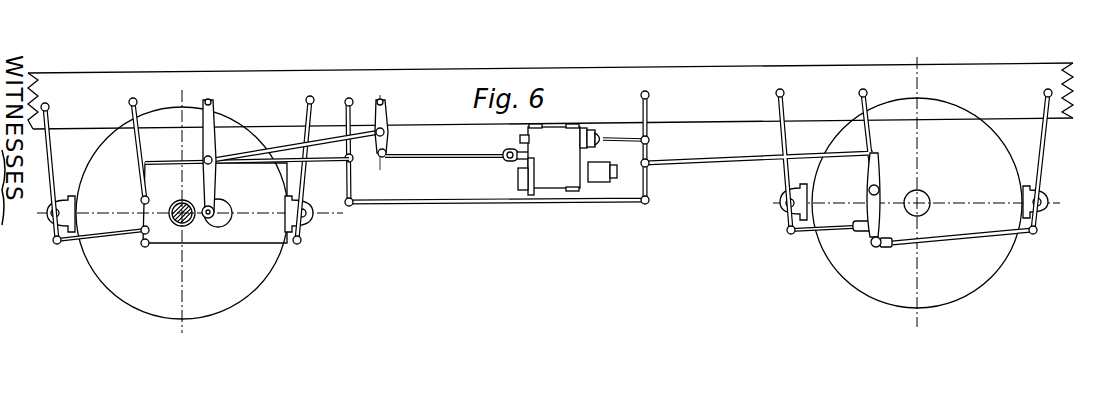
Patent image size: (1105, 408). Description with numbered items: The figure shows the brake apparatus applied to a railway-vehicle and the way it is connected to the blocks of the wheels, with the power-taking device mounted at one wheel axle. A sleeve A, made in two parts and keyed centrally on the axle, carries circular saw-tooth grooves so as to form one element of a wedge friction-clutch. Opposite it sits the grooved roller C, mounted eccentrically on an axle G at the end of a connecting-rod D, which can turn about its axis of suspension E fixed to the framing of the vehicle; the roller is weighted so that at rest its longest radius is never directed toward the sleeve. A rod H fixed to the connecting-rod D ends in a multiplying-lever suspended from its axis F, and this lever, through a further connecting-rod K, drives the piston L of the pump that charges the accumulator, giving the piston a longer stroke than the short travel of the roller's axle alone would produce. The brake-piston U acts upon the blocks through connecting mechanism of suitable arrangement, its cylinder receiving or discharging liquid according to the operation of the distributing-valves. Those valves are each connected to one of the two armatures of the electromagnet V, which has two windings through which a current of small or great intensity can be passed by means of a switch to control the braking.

The sleeve A is at (179, 207).
The roller C is at (223, 210).
The connecting-rod D is at (247, 172).
The axis of suspension E is at (215, 149).
The axis F is at (388, 92).
The axle G is at (213, 219).
The rod H is at (296, 145).
The connecting-rod K is at (445, 145).
The piston L is at (514, 146).
The brake-piston U is at (626, 130).
The electromagnet V is at (602, 172).